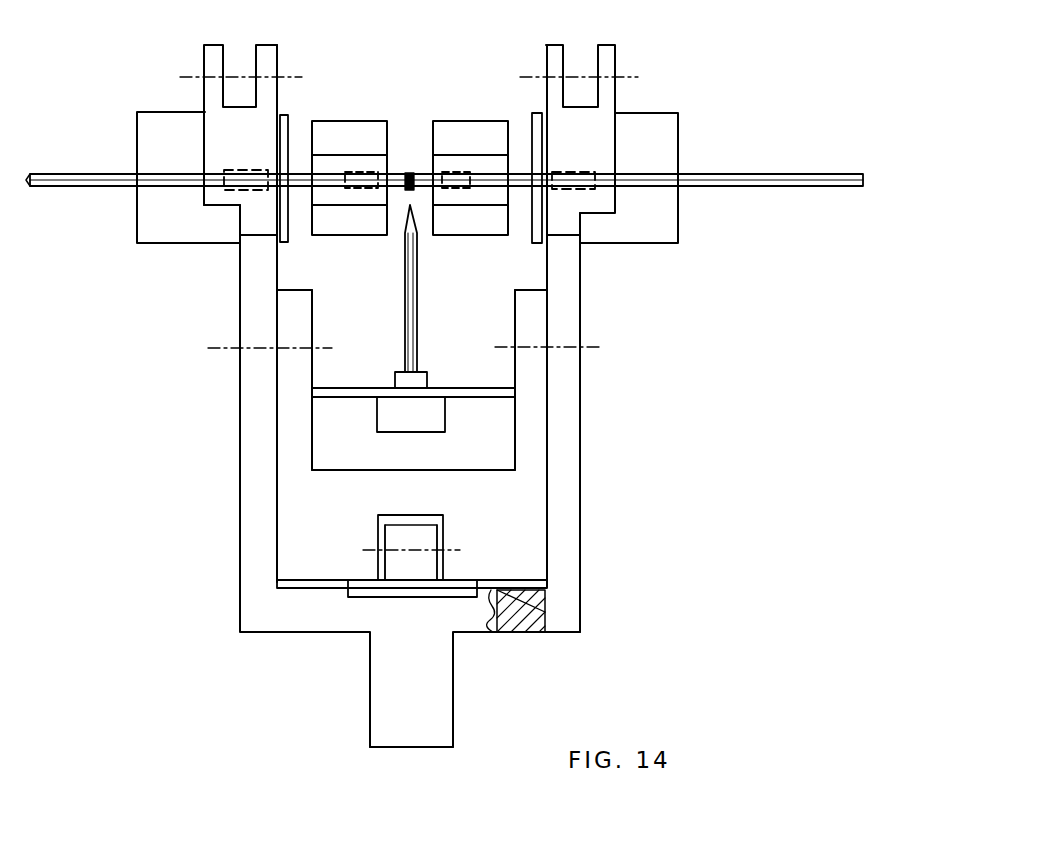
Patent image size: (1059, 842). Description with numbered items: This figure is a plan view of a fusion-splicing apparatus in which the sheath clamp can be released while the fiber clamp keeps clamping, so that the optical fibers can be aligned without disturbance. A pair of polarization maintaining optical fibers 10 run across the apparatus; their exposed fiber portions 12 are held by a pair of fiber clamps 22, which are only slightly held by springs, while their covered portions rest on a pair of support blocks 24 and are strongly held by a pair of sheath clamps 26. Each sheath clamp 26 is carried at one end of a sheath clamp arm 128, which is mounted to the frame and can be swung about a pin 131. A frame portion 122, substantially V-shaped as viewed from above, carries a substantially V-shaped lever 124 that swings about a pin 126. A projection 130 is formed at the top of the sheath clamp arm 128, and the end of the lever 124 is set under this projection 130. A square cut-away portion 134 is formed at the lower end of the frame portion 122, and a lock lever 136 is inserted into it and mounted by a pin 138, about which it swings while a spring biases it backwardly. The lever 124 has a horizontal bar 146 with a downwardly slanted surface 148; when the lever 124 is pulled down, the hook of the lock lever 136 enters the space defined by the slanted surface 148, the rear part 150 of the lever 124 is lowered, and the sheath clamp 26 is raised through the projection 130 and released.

The polarization maintaining optical fiber 10 is at (750, 173).
The exposed fiber portion 12 is at (357, 173).
The fiber clamp 22 is at (367, 170).
The support block 24 is at (666, 236).
The sheath clamp 26 is at (570, 170).
The frame portion 122 is at (530, 427).
The lever 124 is at (557, 520).
The pin 126 is at (587, 347).
The sheath clamp arm 128 is at (605, 112).
The projection 130 is at (562, 233).
The pin 131 is at (533, 76).
The square cut-away portion 134 is at (402, 520).
The lock lever 136 is at (425, 537).
The pin 138 is at (460, 550).
The horizontal bar 146 is at (292, 622).
The slanted surface 148 is at (545, 598).
The rear part 150 is at (438, 683).